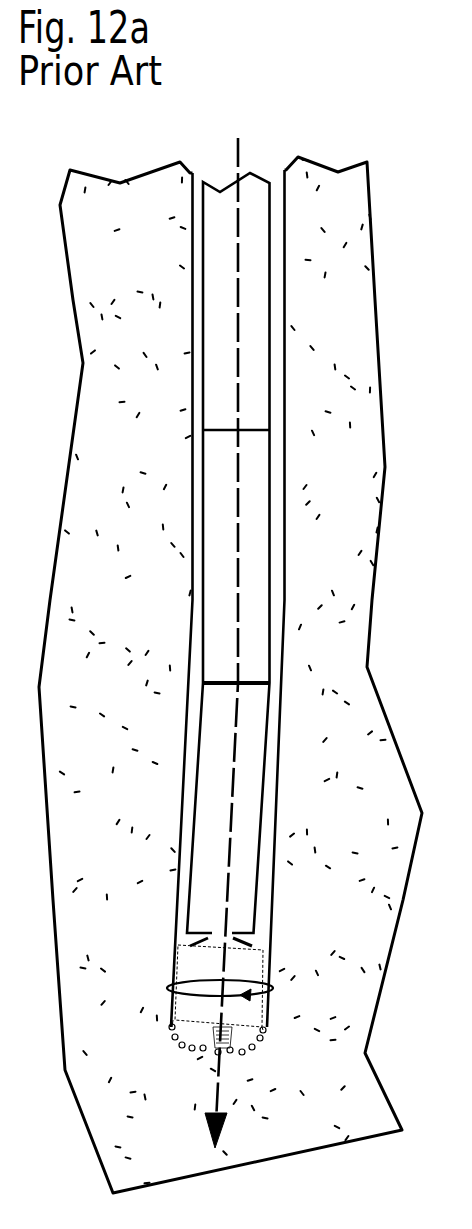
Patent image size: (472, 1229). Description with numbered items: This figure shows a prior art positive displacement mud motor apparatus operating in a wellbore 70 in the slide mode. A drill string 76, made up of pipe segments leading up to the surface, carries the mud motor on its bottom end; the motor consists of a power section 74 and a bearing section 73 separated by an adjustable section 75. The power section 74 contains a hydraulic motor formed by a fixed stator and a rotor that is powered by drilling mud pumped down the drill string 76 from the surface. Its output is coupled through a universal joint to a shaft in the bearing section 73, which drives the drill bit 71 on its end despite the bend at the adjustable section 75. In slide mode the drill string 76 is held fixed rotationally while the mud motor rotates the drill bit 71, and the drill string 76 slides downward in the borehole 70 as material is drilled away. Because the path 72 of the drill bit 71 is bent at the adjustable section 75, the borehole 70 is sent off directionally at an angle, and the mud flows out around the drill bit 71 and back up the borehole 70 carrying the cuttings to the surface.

The wellbore 70 is at (187, 822).
The drill bit 71 is at (188, 963).
The path 72 is at (215, 1088).
The bearing section 73 is at (209, 738).
The power section 74 is at (222, 548).
The adjustable section 75 is at (270, 680).
The drill string 76 is at (212, 243).